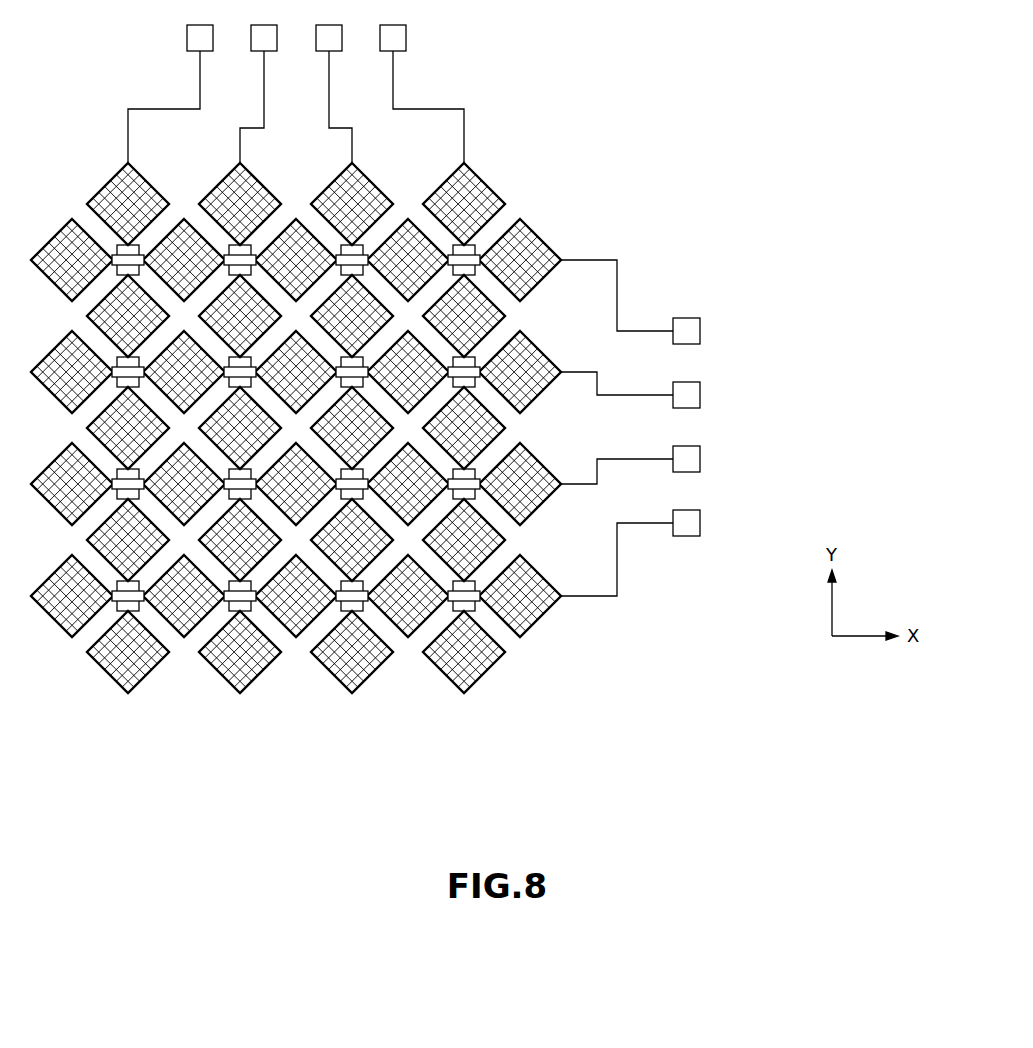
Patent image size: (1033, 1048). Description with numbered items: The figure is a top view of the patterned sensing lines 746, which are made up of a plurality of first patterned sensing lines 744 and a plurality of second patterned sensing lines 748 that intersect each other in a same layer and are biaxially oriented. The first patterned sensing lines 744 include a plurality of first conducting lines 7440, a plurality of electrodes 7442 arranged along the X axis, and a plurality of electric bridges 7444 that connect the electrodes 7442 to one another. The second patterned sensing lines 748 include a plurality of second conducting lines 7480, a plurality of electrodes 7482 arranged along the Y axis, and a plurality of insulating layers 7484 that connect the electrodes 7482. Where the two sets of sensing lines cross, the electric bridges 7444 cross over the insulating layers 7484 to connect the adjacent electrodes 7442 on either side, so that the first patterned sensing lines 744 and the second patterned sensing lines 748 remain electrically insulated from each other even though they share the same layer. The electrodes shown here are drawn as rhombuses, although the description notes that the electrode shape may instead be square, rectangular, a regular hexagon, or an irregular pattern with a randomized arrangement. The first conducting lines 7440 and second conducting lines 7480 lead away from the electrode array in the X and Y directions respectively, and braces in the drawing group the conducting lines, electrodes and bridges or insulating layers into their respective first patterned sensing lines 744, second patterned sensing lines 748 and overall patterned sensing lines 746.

The second conducting lines 7480 is at (466, 108).
The electrodes 7482 is at (610, 181).
The insulating layers 7484 is at (505, 205).
The second patterned sensing lines 748 is at (625, 359).
The electric bridges 7444 is at (478, 246).
The electrodes 7442 is at (548, 236).
The first conducting lines 7440 is at (618, 272).
The first patterned sensing lines 744 is at (451, 265).
The patterned sensing lines 746 is at (486, 359).